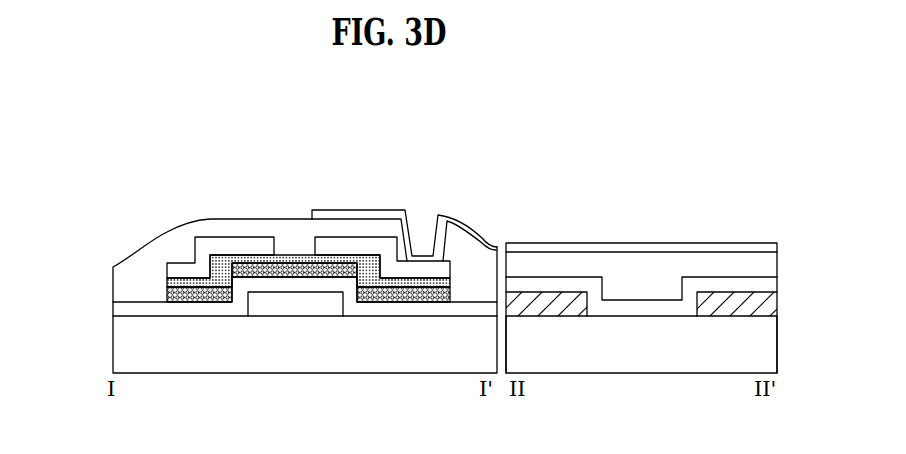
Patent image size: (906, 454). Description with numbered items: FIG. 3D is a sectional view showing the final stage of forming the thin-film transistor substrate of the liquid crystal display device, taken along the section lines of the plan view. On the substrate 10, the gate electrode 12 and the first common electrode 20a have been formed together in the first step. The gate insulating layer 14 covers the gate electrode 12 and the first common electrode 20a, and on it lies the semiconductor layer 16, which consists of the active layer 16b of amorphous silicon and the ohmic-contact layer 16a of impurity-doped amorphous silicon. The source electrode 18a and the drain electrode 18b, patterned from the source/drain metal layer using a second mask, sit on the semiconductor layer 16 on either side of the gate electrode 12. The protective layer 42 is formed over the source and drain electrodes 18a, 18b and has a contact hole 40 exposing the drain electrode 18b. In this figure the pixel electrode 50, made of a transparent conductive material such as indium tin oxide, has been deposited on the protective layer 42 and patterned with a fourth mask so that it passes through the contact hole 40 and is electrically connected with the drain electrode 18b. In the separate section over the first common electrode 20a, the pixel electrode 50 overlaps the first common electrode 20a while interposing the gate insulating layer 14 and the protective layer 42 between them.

The substrate 10 is at (115, 352).
The gate electrode 12 is at (288, 312).
The gate insulating layer 14 is at (115, 307).
The semiconductor layer 16 is at (226, 278).
The ohmic-contact layer 16a is at (167, 282).
The active layer 16b is at (167, 293).
The source electrode 18a is at (247, 243).
The drain electrode 18b is at (320, 242).
The first common electrode 20a is at (770, 302).
The contact hole 40 is at (425, 212).
The protective layer 42 is at (190, 222).
The pixel electrode 50 is at (727, 248).